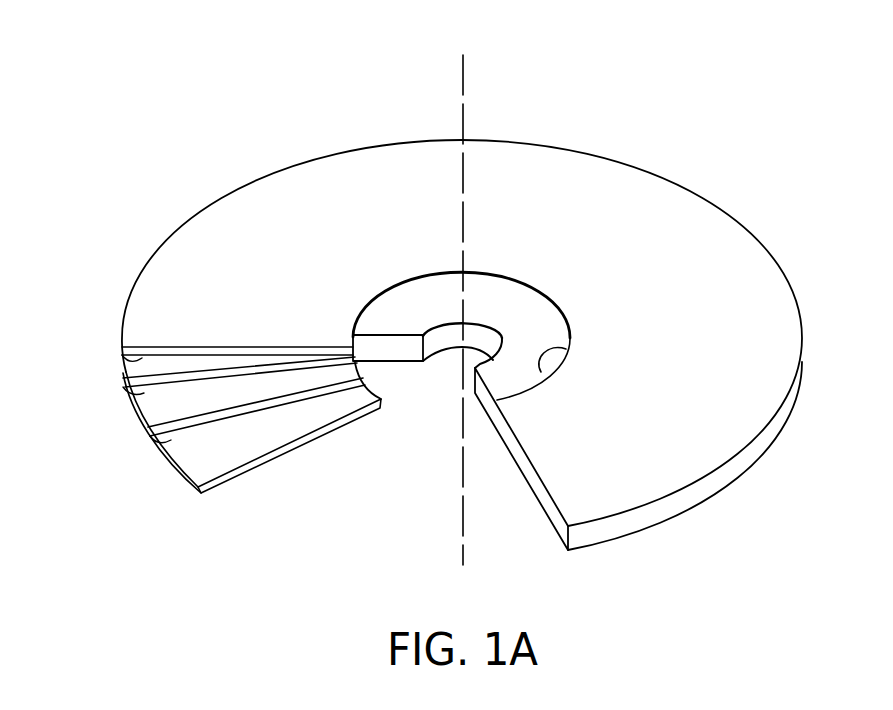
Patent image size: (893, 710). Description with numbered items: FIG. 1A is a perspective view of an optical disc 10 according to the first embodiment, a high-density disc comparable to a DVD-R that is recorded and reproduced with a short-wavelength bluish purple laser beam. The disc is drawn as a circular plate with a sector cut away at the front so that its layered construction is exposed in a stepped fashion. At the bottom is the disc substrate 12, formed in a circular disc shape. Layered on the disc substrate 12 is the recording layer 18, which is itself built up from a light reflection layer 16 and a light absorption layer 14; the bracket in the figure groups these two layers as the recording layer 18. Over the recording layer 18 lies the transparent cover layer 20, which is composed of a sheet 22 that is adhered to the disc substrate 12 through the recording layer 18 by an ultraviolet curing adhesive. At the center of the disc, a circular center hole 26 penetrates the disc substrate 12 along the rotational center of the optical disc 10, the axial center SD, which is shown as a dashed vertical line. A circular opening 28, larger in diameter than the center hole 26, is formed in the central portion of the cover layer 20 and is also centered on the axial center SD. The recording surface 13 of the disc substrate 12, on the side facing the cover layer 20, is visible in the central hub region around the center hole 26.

The optical disc 10 is at (695, 147).
The disc substrate 12 is at (198, 490).
The recording surface 13 is at (513, 305).
The light absorption layer 14 is at (131, 399).
The light reflection layer 16 is at (150, 450).
The recording layer 18 is at (196, 432).
The cover layer 20 is at (123, 369).
The sheet 22 is at (131, 322).
The center hole 26 is at (500, 337).
The circular opening 28 is at (571, 348).
The axial center SD is at (464, 82).